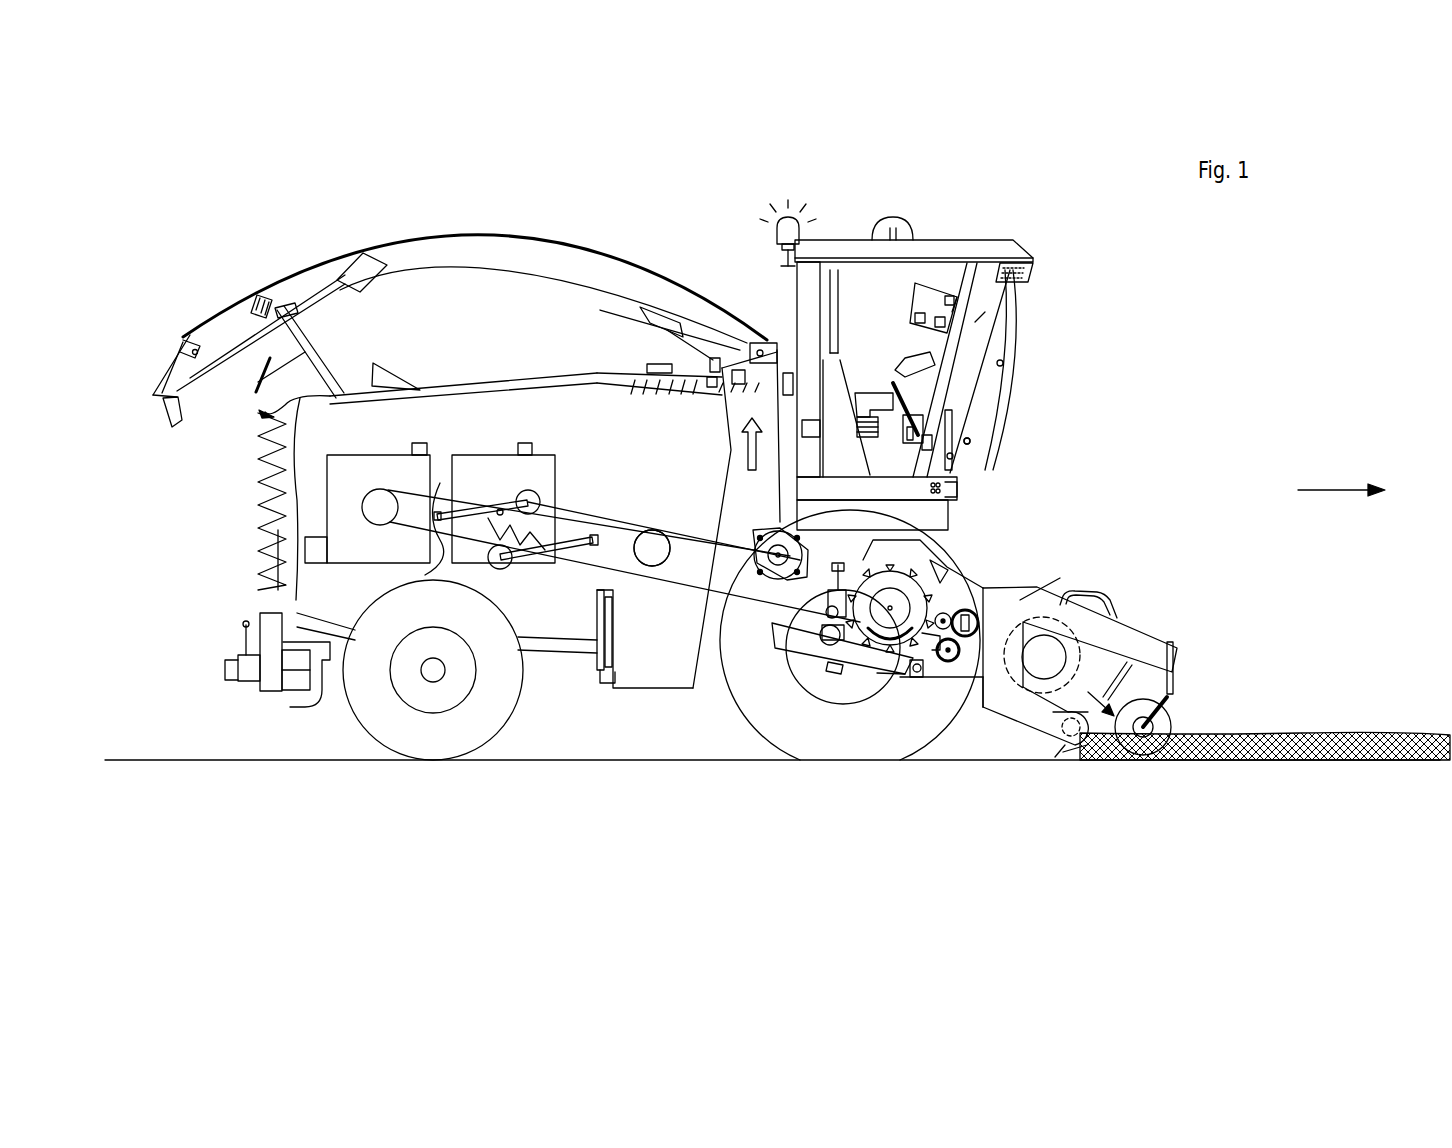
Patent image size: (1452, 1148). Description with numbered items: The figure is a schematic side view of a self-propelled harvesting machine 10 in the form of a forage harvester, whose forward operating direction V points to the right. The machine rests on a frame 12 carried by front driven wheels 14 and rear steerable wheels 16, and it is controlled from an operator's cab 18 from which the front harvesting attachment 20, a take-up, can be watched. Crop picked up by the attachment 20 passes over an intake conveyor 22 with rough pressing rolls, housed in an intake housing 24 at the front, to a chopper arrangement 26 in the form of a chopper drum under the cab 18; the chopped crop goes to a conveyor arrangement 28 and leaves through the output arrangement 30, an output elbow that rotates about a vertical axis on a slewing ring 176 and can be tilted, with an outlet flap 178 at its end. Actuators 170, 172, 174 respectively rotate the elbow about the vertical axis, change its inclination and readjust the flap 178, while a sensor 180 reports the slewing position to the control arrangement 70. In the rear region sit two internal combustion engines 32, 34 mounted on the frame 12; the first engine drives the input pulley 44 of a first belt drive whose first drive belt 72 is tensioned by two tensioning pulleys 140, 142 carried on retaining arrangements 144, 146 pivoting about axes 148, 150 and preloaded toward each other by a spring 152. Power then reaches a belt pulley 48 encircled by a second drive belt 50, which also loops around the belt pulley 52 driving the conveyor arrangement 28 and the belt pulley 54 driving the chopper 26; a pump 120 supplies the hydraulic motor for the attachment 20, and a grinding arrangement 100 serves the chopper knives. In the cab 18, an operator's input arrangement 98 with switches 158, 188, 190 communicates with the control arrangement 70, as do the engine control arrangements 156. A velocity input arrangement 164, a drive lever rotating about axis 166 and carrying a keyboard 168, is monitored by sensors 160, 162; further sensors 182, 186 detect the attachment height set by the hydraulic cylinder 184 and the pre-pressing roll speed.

The harvesting machine 10 is at (1262, 408).
The frame 12 is at (563, 648).
The front driven wheels 14 is at (888, 745).
The rear steerable wheels 16 is at (383, 720).
The operator's cab 18 is at (980, 323).
The front harvesting attachment 20 is at (1172, 610).
The intake conveyor 22 is at (988, 584).
The intake housing 24 is at (962, 680).
The chopper arrangement 26 is at (877, 673).
The conveyor arrangement 28 is at (793, 640).
The output arrangement 30 is at (480, 235).
The first internal combustion engine 32 is at (340, 462).
The second internal combustion engine 34 is at (540, 467).
The input pulley 44 is at (380, 503).
The belt pulley 48 is at (650, 560).
The second drive belt 50 is at (650, 530).
The belt pulley 52 is at (757, 533).
The belt pulley 54 is at (890, 608).
The control arrangement 70 is at (790, 378).
The first drive belt 72 is at (435, 522).
The operator's input arrangement 98 is at (925, 283).
The grinding arrangement 100 is at (943, 567).
The pump 120 is at (317, 550).
The tensioning pulley 140 is at (540, 503).
The tensioning pulley 142 is at (503, 568).
The retaining arrangement 144 is at (495, 510).
The retaining arrangement 146 is at (590, 543).
The axis 148 is at (437, 517).
The axis 150 is at (633, 470).
The spring 152 is at (487, 520).
The engine control arrangement 156 is at (422, 445).
The switch 158 is at (952, 312).
The sensor 160 is at (967, 440).
The sensor 162 is at (967, 440).
The velocity input arrangement 164 is at (885, 385).
The axis of rotation 166 is at (910, 427).
The keyboard 168 is at (863, 407).
The actuator 170 is at (763, 337).
The actuator 172 is at (645, 315).
The actuator 174 is at (367, 270).
The slewing ring 176 is at (765, 383).
The outlet flap 178 is at (175, 417).
The sensor 180 is at (700, 345).
The sensor 182 is at (832, 652).
The hydraulic cylinder 184 is at (757, 582).
The sensor 186 is at (1060, 578).
The switch 188 is at (975, 322).
The switch 190 is at (950, 455).